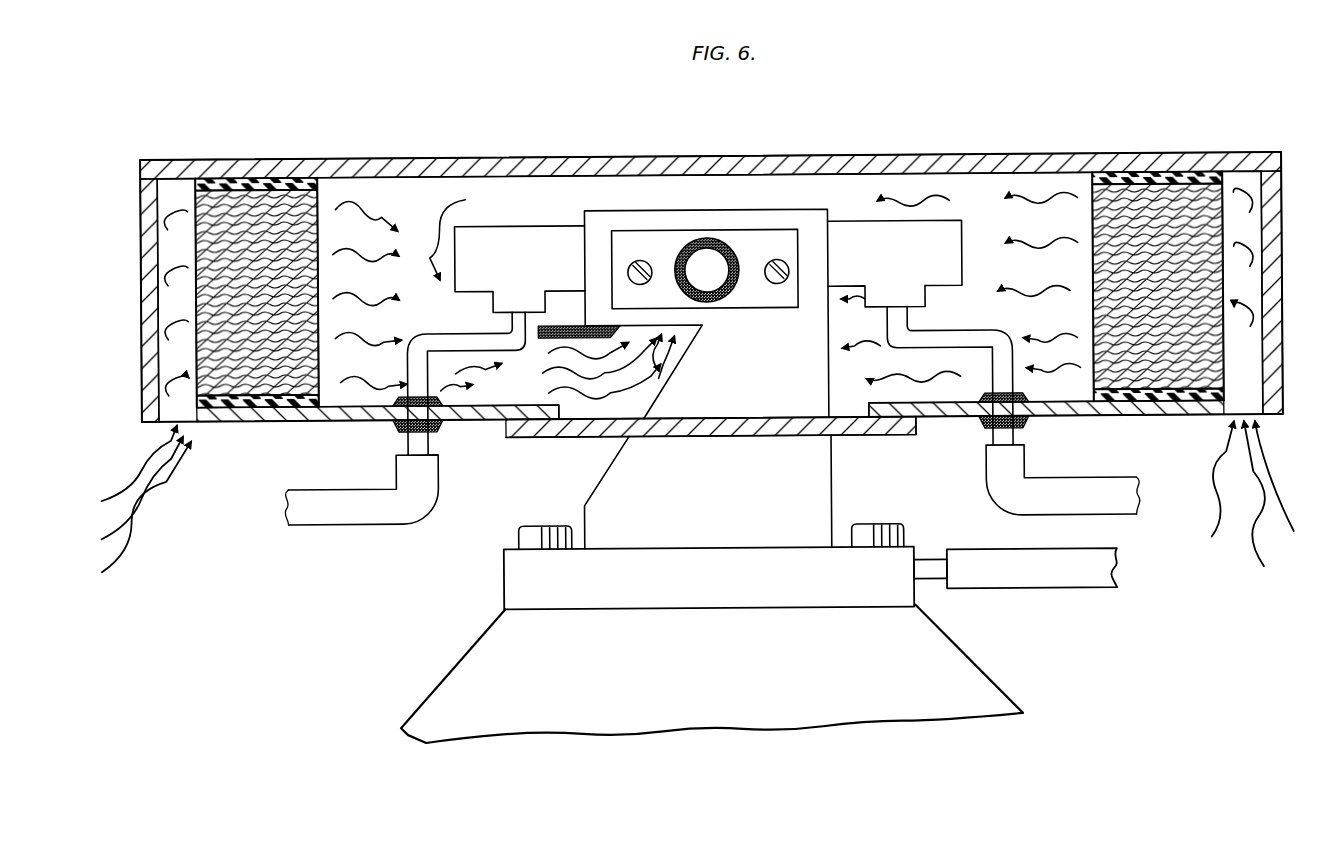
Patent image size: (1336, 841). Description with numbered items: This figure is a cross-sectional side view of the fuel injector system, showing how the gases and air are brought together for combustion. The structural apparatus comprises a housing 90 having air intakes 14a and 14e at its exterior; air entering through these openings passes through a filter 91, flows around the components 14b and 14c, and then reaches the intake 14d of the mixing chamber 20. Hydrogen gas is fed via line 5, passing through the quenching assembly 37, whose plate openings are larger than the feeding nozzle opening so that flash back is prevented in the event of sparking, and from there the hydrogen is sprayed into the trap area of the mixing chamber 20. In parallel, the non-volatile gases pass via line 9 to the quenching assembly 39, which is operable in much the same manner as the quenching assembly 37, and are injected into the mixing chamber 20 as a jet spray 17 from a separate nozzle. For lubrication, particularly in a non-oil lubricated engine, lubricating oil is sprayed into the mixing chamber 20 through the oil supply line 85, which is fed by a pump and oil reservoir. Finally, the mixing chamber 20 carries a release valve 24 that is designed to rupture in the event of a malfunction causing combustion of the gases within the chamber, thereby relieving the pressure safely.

The housing 90 is at (1088, 158).
The filter 91 is at (255, 215).
The mixing chamber 20 is at (828, 488).
The release valve 24 is at (672, 240).
The jet spray 17 is at (655, 352).
The quenching assembly 37 is at (550, 242).
The quenching assembly 39 is at (845, 232).
The line 5 is at (440, 474).
The line 9 is at (1078, 480).
The oil supply line 85 is at (993, 577).
The air intake 14a is at (1226, 512).
The component 14b is at (1064, 246).
The component 14c is at (384, 216).
The intake 14d is at (546, 384).
The air intake 14e is at (178, 504).